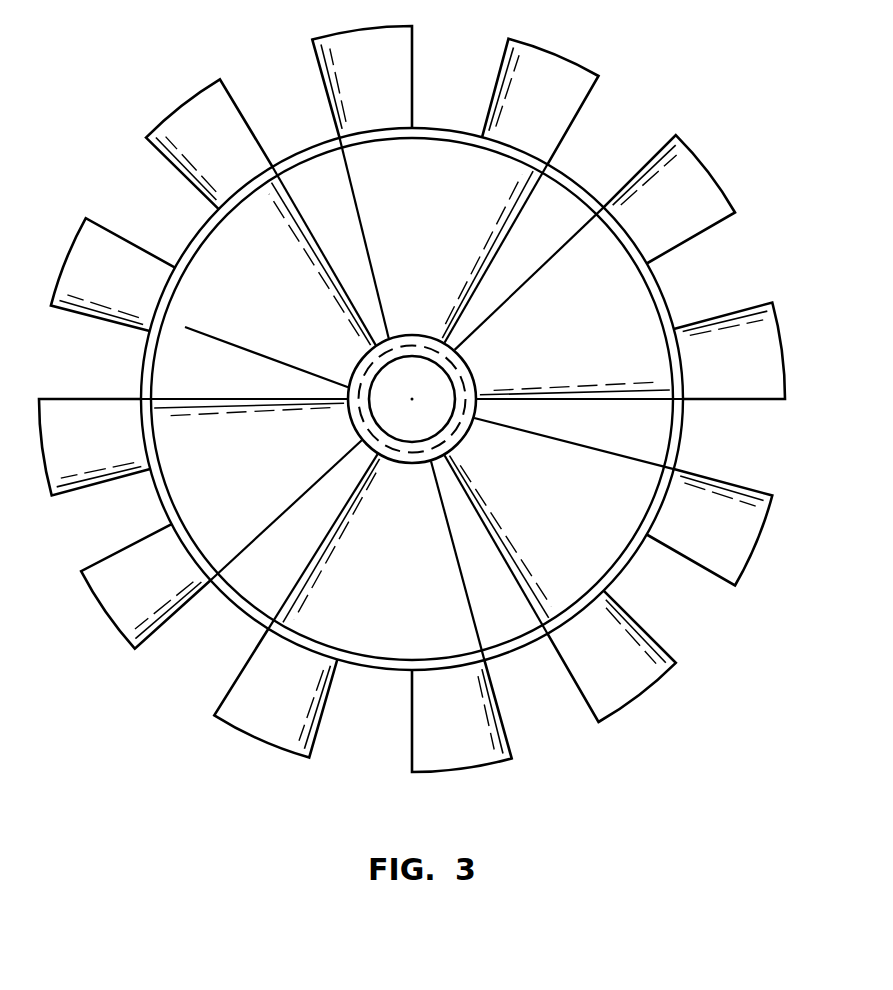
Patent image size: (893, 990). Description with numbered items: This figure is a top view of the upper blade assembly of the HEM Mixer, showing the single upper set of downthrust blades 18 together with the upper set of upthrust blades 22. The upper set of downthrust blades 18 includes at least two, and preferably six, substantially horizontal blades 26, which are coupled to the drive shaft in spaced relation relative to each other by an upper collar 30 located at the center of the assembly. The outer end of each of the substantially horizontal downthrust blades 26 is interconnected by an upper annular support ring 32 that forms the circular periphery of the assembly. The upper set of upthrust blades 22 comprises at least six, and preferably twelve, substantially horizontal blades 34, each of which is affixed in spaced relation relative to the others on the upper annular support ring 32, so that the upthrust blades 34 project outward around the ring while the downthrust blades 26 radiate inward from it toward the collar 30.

The upper set of downthrust blades 18 is at (541, 206).
The upper set of upthrust blades 22 is at (747, 293).
The substantially horizontal blades 26 is at (185, 327).
The upper collar 30 is at (476, 400).
The upper annular support ring 32 is at (158, 492).
The substantially horizontal blades 34 is at (152, 140).